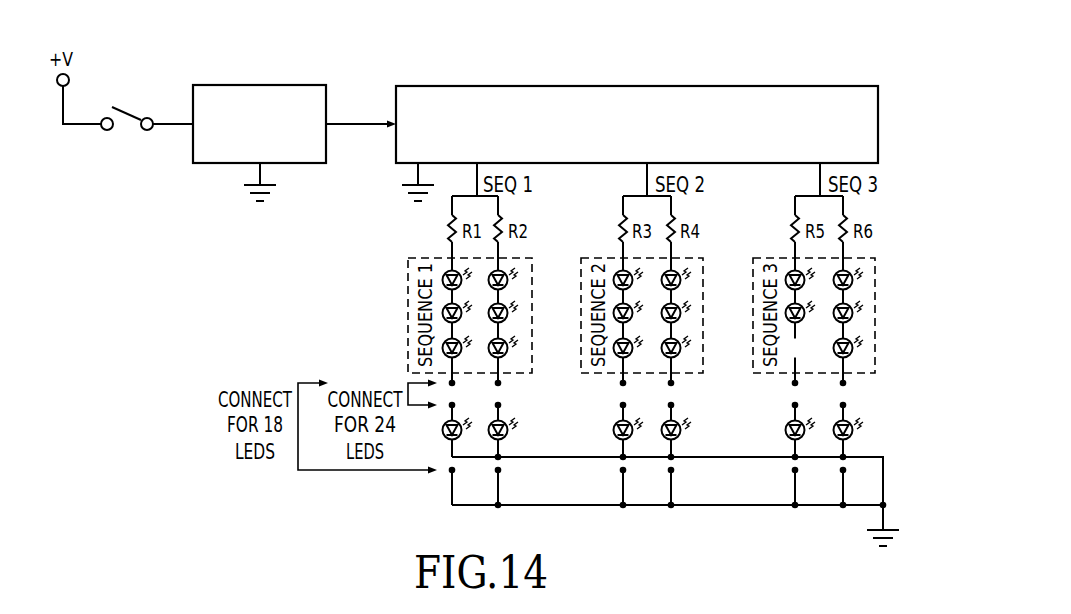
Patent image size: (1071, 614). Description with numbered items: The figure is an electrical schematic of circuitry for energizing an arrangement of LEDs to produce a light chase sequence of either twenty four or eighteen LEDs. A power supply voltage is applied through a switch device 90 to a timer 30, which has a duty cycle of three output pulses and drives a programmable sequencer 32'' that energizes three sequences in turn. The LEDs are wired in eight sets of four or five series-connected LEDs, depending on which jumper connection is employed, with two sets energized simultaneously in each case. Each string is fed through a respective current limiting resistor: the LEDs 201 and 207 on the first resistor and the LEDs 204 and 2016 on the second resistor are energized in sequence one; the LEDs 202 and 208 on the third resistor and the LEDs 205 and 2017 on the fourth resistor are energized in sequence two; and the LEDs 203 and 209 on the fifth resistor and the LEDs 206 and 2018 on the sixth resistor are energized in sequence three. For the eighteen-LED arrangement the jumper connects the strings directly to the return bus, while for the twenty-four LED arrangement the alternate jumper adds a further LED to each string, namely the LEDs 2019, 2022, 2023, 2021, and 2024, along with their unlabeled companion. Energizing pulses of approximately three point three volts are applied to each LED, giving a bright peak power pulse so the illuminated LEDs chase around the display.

The switch device 90 is at (125, 106).
The timer 30 is at (327, 97).
The programmable sequencer 32'' is at (637, 89).
The LED 201 is at (446, 274).
The LED 202 is at (620, 271).
The LED 203 is at (792, 272).
The LED 204 is at (506, 272).
The LED 205 is at (677, 272).
The LED 206 is at (848, 272).
The LED 207 is at (456, 306).
The LED 208 is at (628, 306).
The LED 209 is at (800, 306).
The LED 2016 is at (507, 352).
The LED 2017 is at (677, 352).
The LED 2018 is at (850, 355).
The LED 2019 is at (440, 432).
The LED 2021 is at (789, 436).
The LED 2022 is at (508, 432).
The LED 2023 is at (679, 433).
The LED 2024 is at (854, 434).